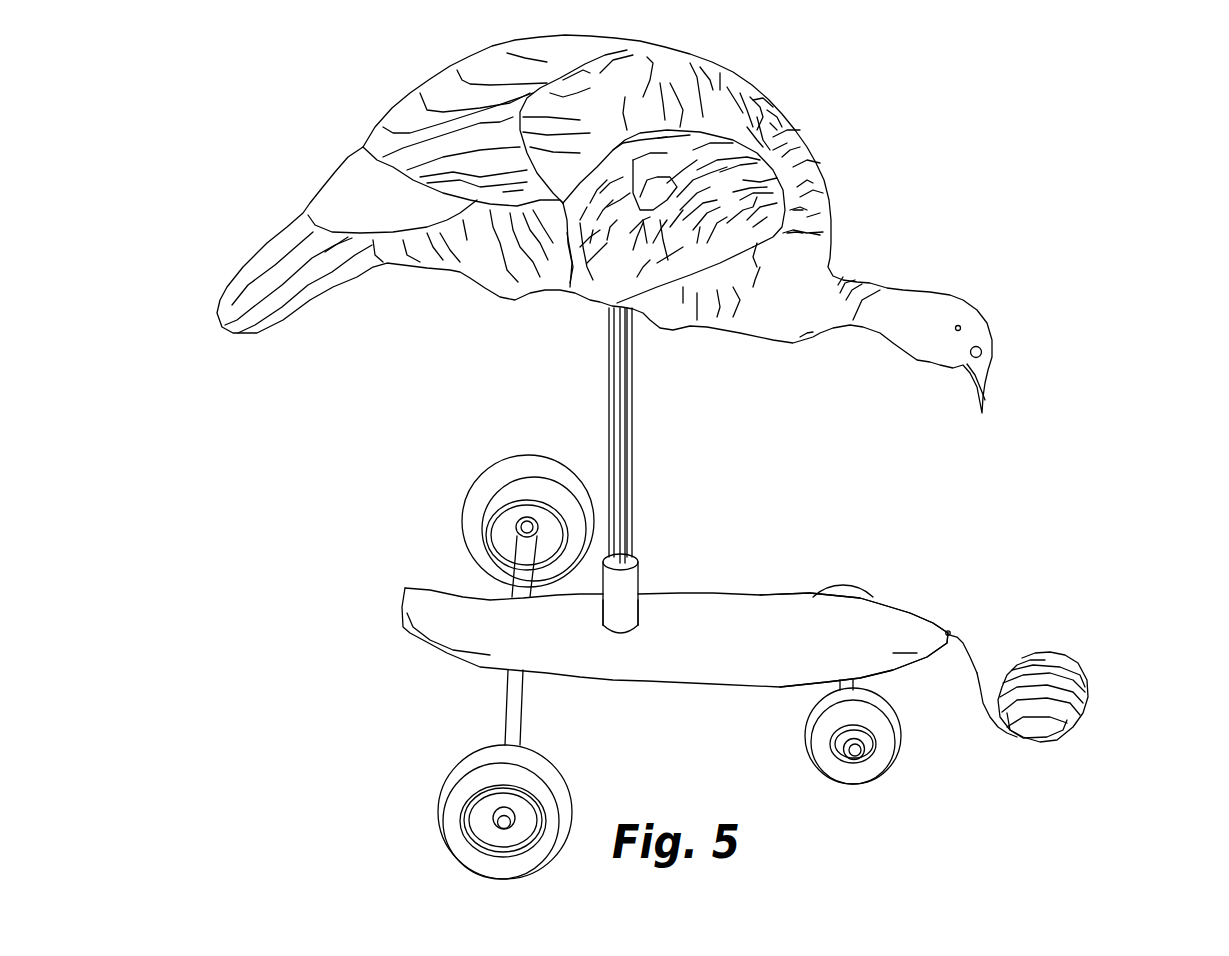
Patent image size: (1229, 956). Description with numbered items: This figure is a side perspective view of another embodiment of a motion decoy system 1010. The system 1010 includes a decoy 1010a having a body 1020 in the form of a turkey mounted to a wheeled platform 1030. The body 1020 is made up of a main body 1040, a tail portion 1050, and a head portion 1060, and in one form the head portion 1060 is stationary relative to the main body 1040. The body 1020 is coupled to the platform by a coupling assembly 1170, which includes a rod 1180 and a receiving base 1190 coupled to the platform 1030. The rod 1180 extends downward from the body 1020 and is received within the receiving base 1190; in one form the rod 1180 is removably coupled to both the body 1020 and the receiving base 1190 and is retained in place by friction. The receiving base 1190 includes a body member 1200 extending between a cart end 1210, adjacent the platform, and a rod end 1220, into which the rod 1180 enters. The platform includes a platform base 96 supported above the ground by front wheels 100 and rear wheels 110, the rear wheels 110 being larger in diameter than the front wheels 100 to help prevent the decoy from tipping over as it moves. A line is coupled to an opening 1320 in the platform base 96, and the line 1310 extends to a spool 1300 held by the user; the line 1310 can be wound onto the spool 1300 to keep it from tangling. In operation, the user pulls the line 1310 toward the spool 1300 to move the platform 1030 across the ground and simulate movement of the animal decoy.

The decoy system 1010 is at (908, 78).
The decoy 1010a is at (398, 52).
The body 1020 is at (744, 58).
The platform 1030 is at (768, 667).
The main body 1040 is at (635, 100).
The tail portion 1050 is at (258, 270).
The head portion 1060 is at (922, 310).
The coupling assembly 1170 is at (607, 410).
The rod 1180 is at (633, 450).
The receiving base 1190 is at (590, 658).
The body member 1200 is at (640, 585).
The cart end 1210 is at (640, 619).
The rod end 1220 is at (628, 548).
The platform base 96 is at (871, 618).
The front wheels 100 is at (803, 720).
The rear wheels 110 is at (447, 820).
The spool 1300 is at (1093, 698).
The line 1310 is at (972, 690).
The opening 1320 is at (949, 628).